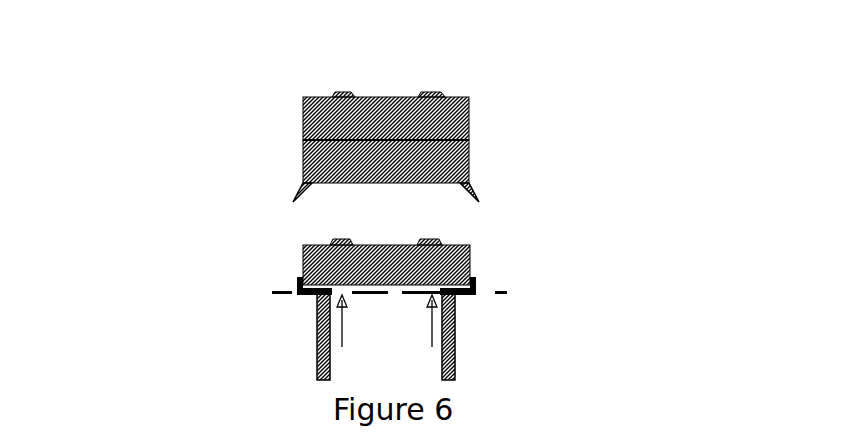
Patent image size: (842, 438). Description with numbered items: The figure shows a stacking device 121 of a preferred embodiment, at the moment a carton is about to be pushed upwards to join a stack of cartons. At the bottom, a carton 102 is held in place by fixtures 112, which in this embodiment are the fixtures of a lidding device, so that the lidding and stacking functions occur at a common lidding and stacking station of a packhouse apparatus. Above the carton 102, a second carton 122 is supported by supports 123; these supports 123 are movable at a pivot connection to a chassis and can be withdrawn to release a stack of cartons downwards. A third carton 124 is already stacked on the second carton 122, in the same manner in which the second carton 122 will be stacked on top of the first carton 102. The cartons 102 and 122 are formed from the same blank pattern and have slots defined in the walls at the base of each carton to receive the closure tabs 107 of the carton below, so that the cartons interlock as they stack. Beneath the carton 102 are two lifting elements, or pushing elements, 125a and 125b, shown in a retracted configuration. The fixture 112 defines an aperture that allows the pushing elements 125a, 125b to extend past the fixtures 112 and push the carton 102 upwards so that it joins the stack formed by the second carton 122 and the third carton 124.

The carton 102 is at (500, 267).
The closure tabs 107 is at (432, 90).
The fixtures 112 is at (505, 306).
The stacking device 121 is at (655, 185).
The second carton 122 is at (262, 161).
The supports 123 is at (258, 195).
The third carton 124 is at (269, 113).
The lifting element 125a is at (483, 365).
The lifting element 125b is at (287, 359).